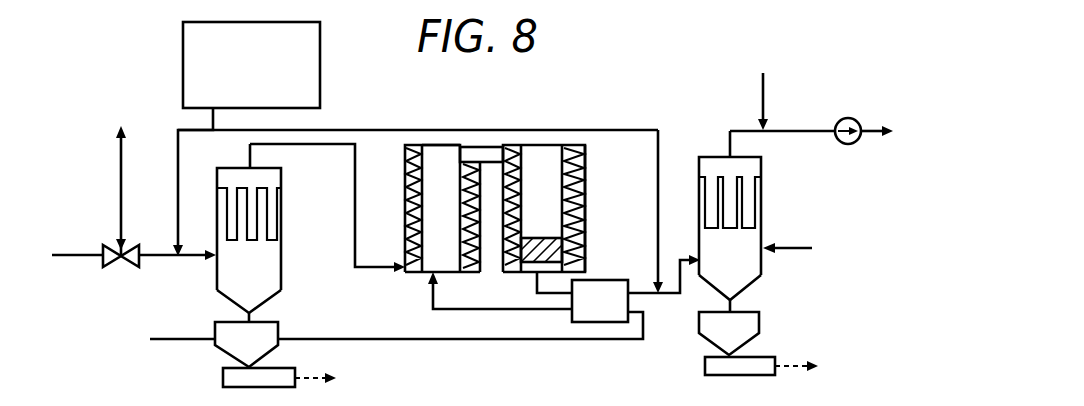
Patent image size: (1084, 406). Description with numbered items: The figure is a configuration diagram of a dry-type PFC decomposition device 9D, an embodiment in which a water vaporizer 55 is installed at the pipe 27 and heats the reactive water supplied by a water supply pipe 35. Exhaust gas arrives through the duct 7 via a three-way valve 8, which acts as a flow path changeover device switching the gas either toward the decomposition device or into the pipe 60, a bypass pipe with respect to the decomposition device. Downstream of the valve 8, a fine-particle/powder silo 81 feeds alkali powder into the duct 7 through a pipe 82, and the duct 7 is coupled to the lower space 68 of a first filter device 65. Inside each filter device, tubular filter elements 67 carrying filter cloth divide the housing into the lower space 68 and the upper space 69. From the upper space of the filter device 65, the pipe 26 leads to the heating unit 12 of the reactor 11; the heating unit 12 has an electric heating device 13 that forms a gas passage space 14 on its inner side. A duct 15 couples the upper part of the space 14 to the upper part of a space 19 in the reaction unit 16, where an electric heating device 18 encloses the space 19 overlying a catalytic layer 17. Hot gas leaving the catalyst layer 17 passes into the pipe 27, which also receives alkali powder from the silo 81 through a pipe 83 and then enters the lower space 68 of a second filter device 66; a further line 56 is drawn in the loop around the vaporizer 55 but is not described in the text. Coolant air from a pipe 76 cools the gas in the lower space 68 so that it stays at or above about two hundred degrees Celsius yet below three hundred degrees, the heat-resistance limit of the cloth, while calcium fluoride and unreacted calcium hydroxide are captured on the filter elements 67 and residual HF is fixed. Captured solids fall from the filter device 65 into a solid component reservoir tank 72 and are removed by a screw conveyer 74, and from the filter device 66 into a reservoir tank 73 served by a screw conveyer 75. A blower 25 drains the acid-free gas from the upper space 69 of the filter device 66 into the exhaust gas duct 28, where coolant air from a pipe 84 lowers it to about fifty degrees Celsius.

The duct 7 is at (93, 257).
The three-way valve 8 is at (112, 247).
The PFC decomposition device 9D is at (598, 90).
The reactor 11 is at (536, 146).
The heating unit 12 is at (404, 200).
The heating device 13 is at (404, 274).
The space 14 is at (432, 144).
The duct 15 is at (484, 146).
The reaction unit 16 is at (586, 180).
The catalytic layer 17 is at (528, 265).
The heating device 18 is at (566, 150).
The space 19 is at (554, 198).
The blower 25 is at (849, 118).
The pipe 26 is at (356, 158).
The pipe 27 is at (553, 311).
The exhaust gas duct 28 is at (808, 130).
The water supply pipe 35 is at (170, 338).
The water vaporizer 55 is at (600, 323).
The recirculation pipe 56 is at (458, 311).
The pipe 60 is at (120, 166).
The filter device 65 is at (282, 263).
The filter device 66 is at (762, 213).
The filter element 67 is at (278, 221).
The lower space 68 is at (216, 278).
The upper space 69 is at (282, 170).
The solid component reservoir tank 72 is at (279, 325).
The solid component reservoir tank 73 is at (760, 316).
The screw conveyer 74 is at (224, 381).
The screw conveyer 75 is at (705, 364).
The pipe 76 is at (812, 248).
The powder silo 81 is at (321, 69).
The pipe 82 is at (178, 164).
The pipe 83 is at (657, 213).
The pipe 84 is at (762, 98).